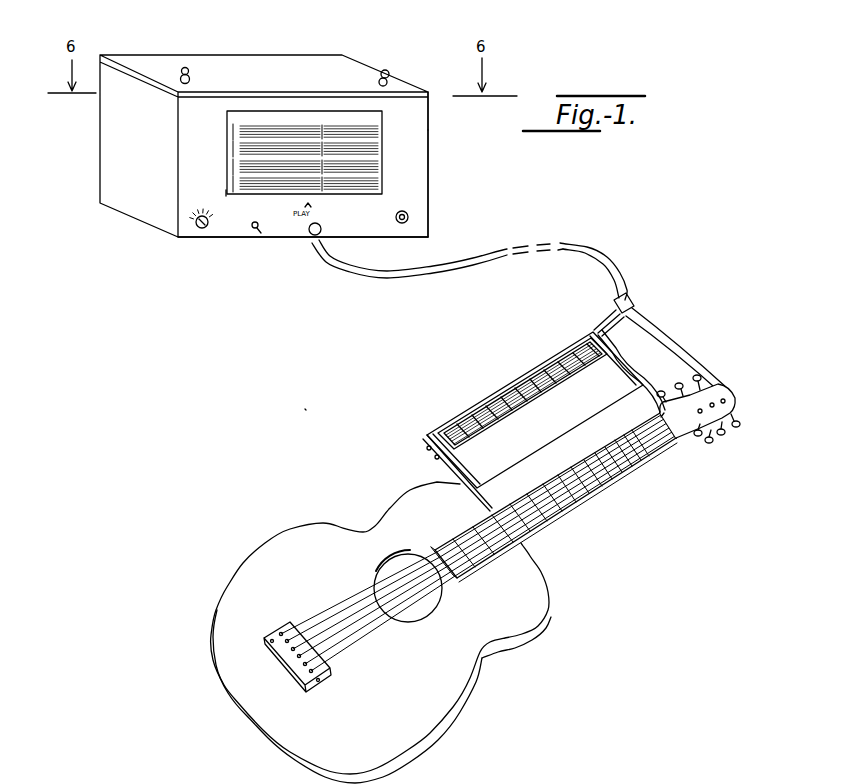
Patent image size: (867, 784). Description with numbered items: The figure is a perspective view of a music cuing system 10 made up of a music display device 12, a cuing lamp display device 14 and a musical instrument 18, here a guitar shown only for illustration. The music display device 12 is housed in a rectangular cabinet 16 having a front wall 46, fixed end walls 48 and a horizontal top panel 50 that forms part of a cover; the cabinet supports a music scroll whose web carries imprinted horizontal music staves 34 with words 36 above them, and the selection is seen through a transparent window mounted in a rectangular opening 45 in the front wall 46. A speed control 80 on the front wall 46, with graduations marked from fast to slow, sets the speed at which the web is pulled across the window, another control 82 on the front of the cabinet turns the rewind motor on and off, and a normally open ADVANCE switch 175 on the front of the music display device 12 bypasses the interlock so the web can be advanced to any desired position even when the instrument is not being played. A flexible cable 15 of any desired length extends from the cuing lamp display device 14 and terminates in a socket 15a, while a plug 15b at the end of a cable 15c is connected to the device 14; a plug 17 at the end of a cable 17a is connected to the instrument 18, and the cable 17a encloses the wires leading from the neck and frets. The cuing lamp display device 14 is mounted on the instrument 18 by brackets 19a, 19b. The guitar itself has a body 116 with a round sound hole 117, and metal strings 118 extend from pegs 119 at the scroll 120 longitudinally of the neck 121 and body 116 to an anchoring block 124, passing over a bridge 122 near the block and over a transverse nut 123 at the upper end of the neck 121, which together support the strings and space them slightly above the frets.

The music cuing system 10 is at (295, 414).
The music display device 12 is at (155, 240).
The cuing lamp display device 14 is at (478, 388).
The flexible cable 15 is at (422, 276).
The socket 15a is at (608, 311).
The plug 15b is at (604, 318).
The cable 15c is at (600, 326).
The rectangular cabinet 16 is at (421, 162).
The plug 17 is at (632, 304).
The cable 17a is at (735, 328).
The musical instrument 18 is at (559, 584).
The bracket 19a is at (507, 470).
The bracket 19b is at (620, 383).
The horizontal music staves 34 is at (195, 133).
The words 36 is at (267, 114).
The rectangular opening 45 is at (225, 196).
The front wall 46 is at (417, 183).
The end walls 48 is at (428, 128).
The horizontal top panel 50 is at (395, 83).
The speed control 80 is at (180, 226).
The control 82 is at (415, 215).
The body 116 is at (420, 727).
The round sound hole 117 is at (478, 652).
The metal strings 118 is at (600, 493).
The pegs 119 is at (733, 403).
The scroll 120 is at (712, 398).
The neck 121 is at (635, 468).
The bridge 122 is at (290, 627).
The transverse nut 123 is at (668, 440).
The anchoring block 124 is at (283, 637).
The ADVANCE switch 175 is at (267, 236).